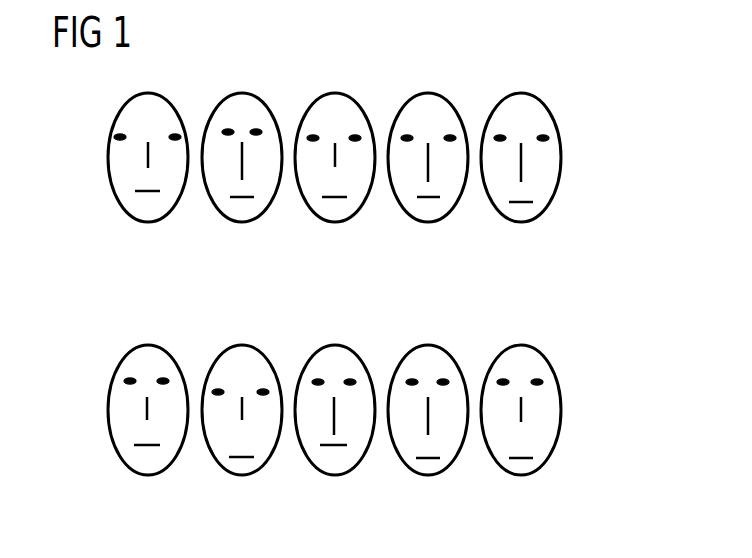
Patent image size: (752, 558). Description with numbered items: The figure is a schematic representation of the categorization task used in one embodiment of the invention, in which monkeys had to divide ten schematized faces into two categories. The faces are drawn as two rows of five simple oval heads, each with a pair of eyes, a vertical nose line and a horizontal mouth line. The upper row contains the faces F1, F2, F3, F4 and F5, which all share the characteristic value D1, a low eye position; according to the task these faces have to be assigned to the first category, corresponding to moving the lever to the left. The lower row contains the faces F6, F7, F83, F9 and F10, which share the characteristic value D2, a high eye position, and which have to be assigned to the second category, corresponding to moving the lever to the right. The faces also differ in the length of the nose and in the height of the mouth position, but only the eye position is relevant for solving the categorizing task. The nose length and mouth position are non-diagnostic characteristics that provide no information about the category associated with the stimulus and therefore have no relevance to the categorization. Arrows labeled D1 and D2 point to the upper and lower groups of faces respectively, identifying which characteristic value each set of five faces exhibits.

The characteristic value low eye position D1 is at (561, 98).
The characteristic value high eye position D2 is at (558, 355).
The schematized face F1 is at (148, 175).
The schematized face F2 is at (242, 175).
The schematized face F3 is at (335, 175).
The schematized face F4 is at (428, 175).
The schematized face F5 is at (521, 175).
The schematized face F6 is at (148, 427).
The schematized face F7 is at (242, 427).
The schematized face F83 is at (335, 427).
The schematized face F9 is at (428, 427).
The schematized face F10 is at (521, 428).